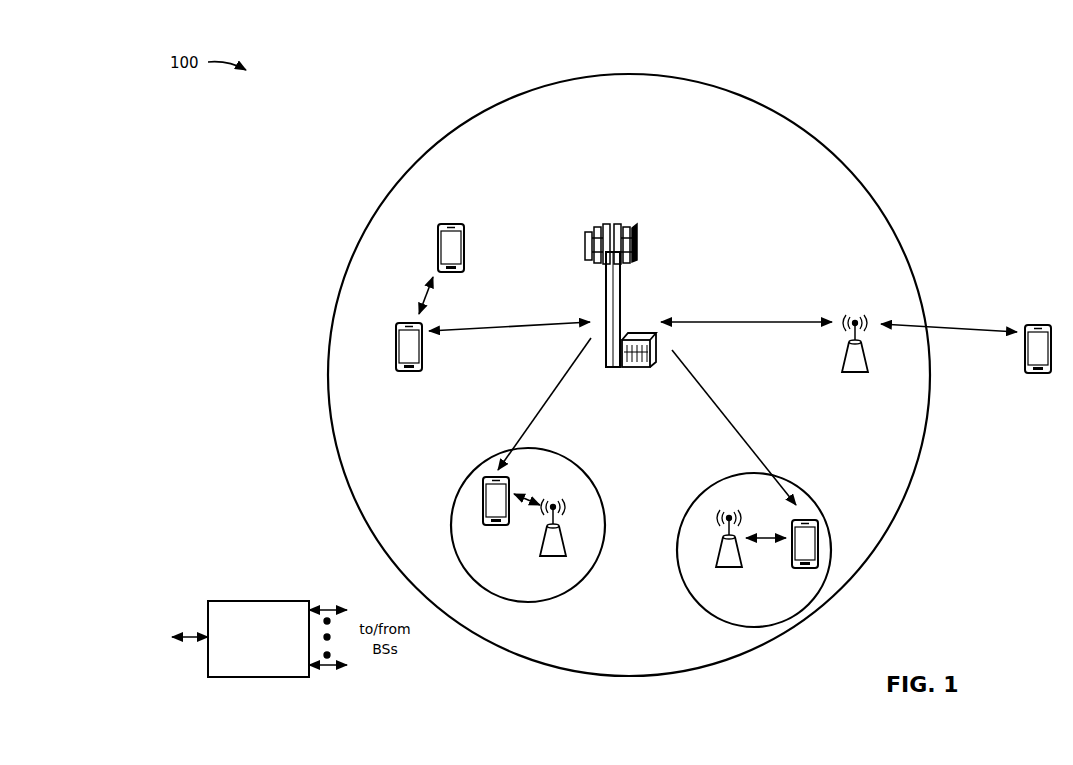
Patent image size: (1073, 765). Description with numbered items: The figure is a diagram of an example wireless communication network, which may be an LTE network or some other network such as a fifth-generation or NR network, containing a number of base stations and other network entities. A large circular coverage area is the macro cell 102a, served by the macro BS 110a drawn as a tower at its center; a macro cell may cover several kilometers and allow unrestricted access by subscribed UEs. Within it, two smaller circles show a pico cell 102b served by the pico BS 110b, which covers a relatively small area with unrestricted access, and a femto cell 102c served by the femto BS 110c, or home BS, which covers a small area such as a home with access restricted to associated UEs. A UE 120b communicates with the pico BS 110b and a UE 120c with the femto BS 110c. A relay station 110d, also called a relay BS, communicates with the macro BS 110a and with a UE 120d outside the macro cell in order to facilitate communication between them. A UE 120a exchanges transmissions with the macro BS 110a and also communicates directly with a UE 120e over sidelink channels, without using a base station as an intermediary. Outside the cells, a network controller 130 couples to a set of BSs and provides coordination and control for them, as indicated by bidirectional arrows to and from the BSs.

The macro cell 102a is at (828, 146).
The pico cell 102b is at (590, 474).
The femto cell 102c is at (710, 488).
The macro BS 110a is at (629, 218).
The pico BS 110b is at (568, 548).
The femto BS 110c is at (717, 562).
The relay station 110d is at (856, 318).
The UE 120a is at (395, 345).
The UE 120b is at (491, 528).
The UE 120c is at (797, 571).
The UE 120d is at (1041, 322).
The UE 120e is at (439, 236).
The network controller 130 is at (257, 600).